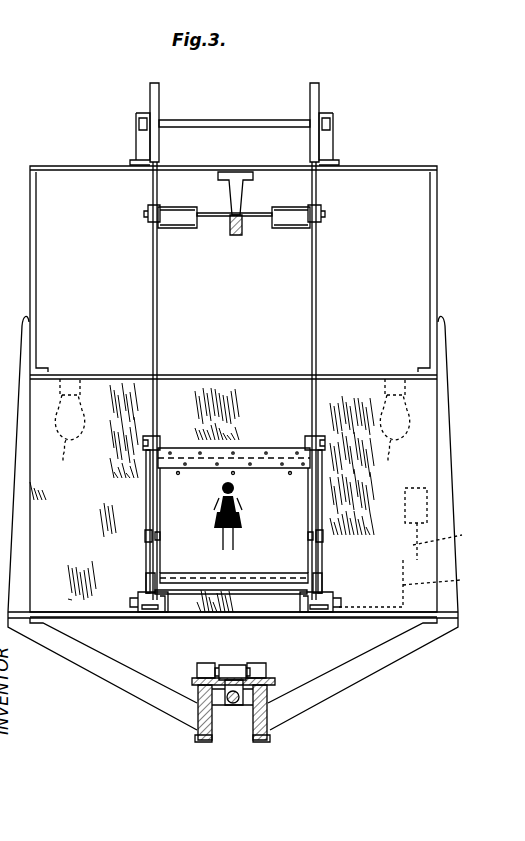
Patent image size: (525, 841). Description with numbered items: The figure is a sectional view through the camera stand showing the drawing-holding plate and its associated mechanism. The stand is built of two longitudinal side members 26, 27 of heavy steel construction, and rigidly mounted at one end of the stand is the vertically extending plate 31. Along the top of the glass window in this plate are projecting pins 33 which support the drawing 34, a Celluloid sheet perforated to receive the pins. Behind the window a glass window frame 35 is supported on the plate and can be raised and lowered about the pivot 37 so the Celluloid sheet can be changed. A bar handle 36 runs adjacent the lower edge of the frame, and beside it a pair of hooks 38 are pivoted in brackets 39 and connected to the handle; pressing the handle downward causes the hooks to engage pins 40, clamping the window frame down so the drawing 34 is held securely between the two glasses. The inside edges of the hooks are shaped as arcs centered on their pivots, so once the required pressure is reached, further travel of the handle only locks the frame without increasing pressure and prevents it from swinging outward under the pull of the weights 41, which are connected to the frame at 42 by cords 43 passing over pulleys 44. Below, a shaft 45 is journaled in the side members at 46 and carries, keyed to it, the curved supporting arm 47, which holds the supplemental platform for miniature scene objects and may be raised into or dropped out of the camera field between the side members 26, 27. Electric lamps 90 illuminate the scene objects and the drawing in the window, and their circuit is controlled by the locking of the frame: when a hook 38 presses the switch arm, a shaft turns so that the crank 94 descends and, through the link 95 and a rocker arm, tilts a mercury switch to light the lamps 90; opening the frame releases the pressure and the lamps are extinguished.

The longitudinal side member 26 is at (200, 742).
The longitudinal side member 27 is at (262, 742).
The vertically extending plate 31 is at (430, 427).
The projecting pins 33 is at (291, 468).
The drawing 34 is at (234, 521).
The glass window frame 35 is at (308, 565).
The bar handle 36 is at (272, 614).
The pivot 37 is at (148, 437).
The hooks 38 is at (150, 610).
The brackets 39 is at (150, 590).
The pins 40 is at (150, 610).
The weights 41 is at (190, 228).
The connection point 42 is at (145, 536).
The cords 43 is at (157, 311).
The pulleys 44 is at (150, 100).
The shaft 45 is at (233, 665).
The journals 46 is at (197, 670).
The curved supporting arm 47 is at (233, 703).
The electric lamps 90 is at (232, 424).
The crank 94 is at (411, 583).
The link 95 is at (445, 524).